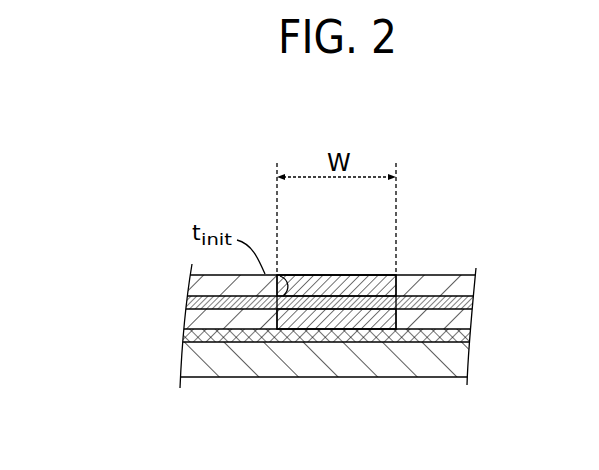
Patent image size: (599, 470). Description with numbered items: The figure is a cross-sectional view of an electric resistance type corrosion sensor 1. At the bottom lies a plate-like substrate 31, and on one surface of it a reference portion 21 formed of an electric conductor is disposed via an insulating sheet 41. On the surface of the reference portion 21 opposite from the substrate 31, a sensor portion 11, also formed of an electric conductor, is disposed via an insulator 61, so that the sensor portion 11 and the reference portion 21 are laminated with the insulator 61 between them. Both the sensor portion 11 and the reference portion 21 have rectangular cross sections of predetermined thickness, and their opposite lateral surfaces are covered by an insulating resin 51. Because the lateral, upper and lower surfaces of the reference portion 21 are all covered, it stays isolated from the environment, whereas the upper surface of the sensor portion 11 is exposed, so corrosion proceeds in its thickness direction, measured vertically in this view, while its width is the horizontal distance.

The corrosion sensor 1 is at (486, 219).
The sensor portion 11 is at (320, 275).
The reference portion 21 is at (333, 329).
The substrate 31 is at (470, 360).
The insulating sheet 41 is at (470, 336).
The insulating resin 51 is at (437, 275).
The insulator 61 is at (472, 303).